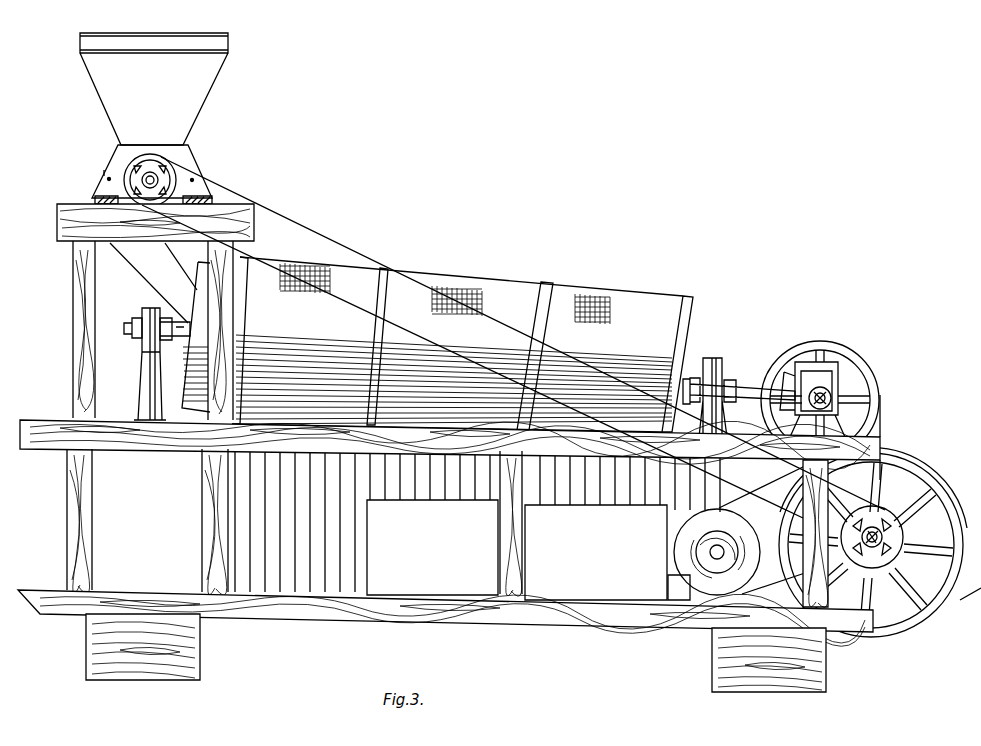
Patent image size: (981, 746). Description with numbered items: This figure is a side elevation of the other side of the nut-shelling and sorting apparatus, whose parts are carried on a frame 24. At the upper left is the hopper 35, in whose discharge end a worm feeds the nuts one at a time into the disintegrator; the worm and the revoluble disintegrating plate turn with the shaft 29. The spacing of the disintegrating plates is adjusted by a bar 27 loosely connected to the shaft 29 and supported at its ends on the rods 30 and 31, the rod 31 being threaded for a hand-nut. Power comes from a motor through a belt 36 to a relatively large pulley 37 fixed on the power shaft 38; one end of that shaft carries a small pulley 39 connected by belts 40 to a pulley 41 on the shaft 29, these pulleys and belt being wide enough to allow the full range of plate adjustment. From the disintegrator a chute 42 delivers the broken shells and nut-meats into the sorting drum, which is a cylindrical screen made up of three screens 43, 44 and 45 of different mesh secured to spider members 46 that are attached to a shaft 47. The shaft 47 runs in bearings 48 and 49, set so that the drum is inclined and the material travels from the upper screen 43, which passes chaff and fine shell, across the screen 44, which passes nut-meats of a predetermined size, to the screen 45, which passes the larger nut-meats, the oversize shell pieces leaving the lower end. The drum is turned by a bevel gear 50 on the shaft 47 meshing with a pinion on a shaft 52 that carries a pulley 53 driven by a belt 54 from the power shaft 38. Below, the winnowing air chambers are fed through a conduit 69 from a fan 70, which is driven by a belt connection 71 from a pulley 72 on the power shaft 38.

The frame 24 is at (93, 516).
The bar 27 is at (200, 170).
The shaft 29 is at (194, 180).
The rod 30 is at (106, 180).
The rod 31 is at (197, 173).
The hopper 35 is at (186, 83).
The belt 36 is at (945, 482).
The relatively large pulley 37 is at (874, 548).
The power shaft 38 is at (876, 546).
The small pulley 39 is at (876, 542).
The belts 40 is at (366, 262).
The pulley 41 is at (172, 157).
The chute 42 is at (148, 270).
The screen 43 is at (337, 276).
The screen 44 is at (502, 292).
The screen 45 is at (639, 320).
The spider members 46 is at (244, 262).
The shaft 47 is at (130, 336).
The bearing 48 is at (712, 360).
The bearing 49 is at (148, 320).
The bevel gear 50 is at (790, 370).
The shaft 52 is at (824, 390).
The pulley 53 is at (820, 345).
The belt 54 is at (881, 425).
The conduit 69 is at (578, 560).
The fan 70 is at (690, 568).
The belt connection 71 is at (772, 498).
The pulley 72 is at (892, 462).